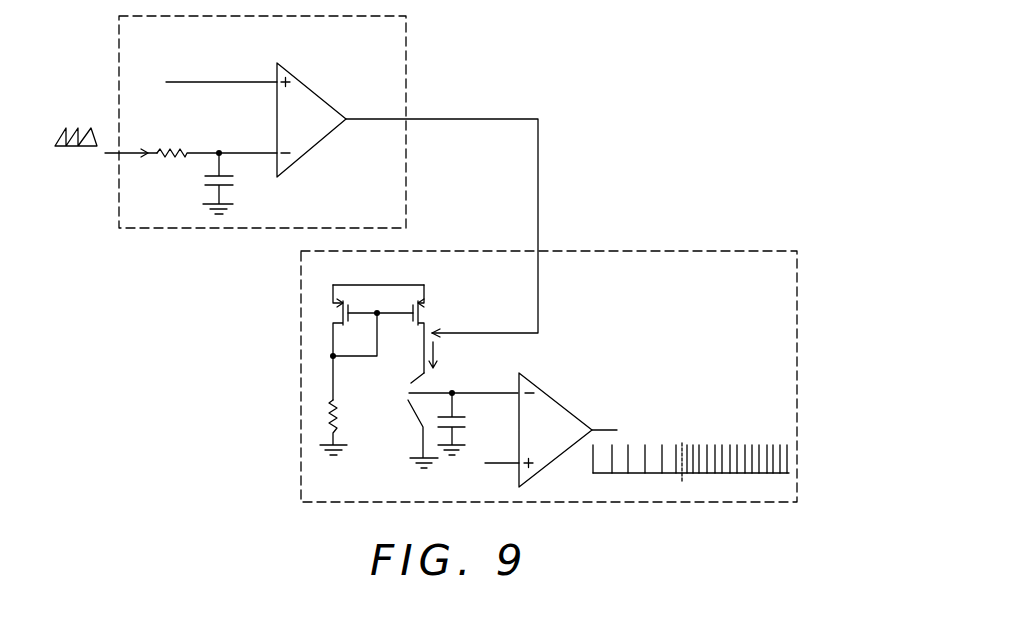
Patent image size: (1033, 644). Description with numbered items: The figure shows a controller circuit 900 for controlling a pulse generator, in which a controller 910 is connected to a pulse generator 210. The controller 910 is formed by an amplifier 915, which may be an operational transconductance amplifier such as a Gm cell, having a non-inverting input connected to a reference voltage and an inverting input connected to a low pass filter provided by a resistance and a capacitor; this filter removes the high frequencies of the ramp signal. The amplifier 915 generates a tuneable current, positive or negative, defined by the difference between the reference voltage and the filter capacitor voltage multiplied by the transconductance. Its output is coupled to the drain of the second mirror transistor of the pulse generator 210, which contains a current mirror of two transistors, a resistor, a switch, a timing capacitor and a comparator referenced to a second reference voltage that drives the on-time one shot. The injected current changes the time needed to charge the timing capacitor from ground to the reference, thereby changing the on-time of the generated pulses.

The on-time generation circuit 900 is at (163, 434).
The controller 910 is at (406, 54).
The amplifier 915 is at (318, 90).
The pulse generator 210 is at (725, 251).